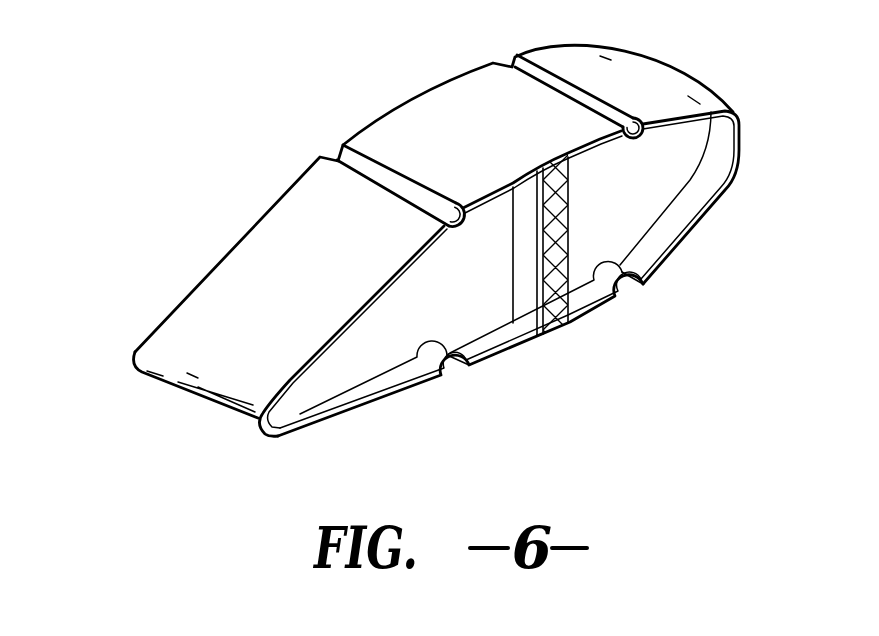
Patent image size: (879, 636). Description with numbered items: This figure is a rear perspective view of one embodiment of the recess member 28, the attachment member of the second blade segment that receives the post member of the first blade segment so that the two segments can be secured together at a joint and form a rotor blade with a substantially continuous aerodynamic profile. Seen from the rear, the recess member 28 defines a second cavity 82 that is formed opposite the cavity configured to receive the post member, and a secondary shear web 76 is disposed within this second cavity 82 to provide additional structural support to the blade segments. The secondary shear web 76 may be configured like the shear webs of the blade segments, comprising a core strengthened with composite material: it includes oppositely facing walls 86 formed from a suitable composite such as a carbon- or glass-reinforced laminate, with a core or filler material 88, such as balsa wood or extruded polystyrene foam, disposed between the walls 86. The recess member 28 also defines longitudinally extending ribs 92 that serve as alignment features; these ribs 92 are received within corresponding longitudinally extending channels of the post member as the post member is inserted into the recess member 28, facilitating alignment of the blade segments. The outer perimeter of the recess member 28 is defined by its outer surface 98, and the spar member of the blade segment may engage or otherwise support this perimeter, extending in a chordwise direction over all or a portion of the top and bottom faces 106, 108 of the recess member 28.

The recess member 28 is at (172, 110).
The secondary shear web 76 is at (578, 228).
The second cavity 82 is at (687, 215).
The oppositely facing walls 86 is at (530, 307).
The core or filler material 88 is at (568, 290).
The longitudinally extending ribs 92 is at (339, 148).
The outer surface 98 is at (205, 387).
The top face 106 is at (254, 270).
The bottom face 108 is at (382, 401).